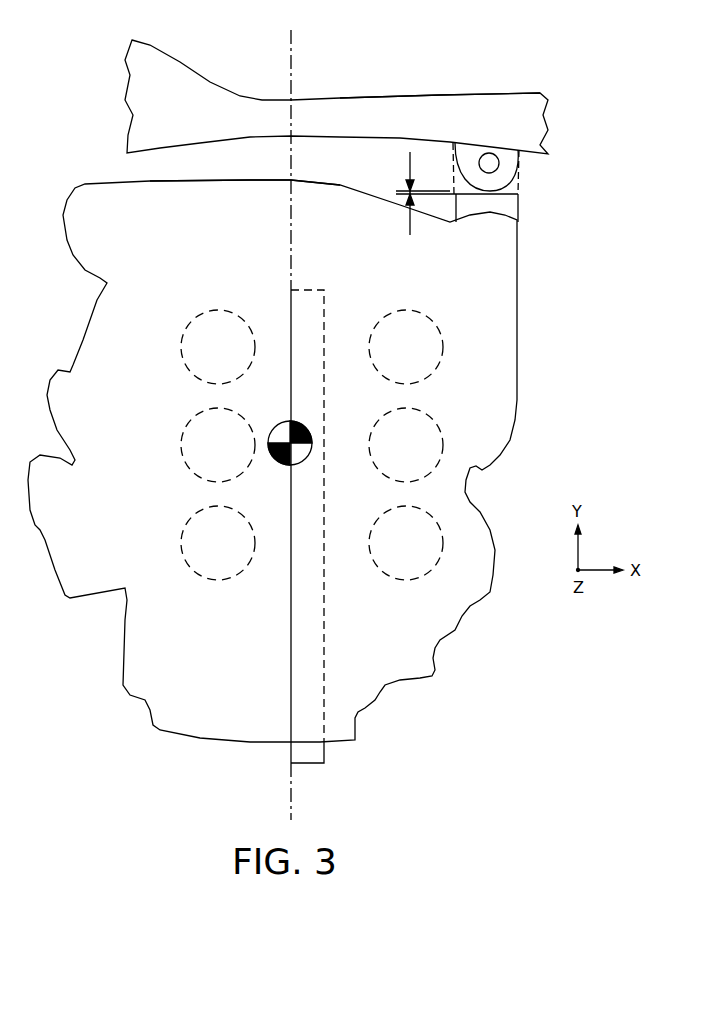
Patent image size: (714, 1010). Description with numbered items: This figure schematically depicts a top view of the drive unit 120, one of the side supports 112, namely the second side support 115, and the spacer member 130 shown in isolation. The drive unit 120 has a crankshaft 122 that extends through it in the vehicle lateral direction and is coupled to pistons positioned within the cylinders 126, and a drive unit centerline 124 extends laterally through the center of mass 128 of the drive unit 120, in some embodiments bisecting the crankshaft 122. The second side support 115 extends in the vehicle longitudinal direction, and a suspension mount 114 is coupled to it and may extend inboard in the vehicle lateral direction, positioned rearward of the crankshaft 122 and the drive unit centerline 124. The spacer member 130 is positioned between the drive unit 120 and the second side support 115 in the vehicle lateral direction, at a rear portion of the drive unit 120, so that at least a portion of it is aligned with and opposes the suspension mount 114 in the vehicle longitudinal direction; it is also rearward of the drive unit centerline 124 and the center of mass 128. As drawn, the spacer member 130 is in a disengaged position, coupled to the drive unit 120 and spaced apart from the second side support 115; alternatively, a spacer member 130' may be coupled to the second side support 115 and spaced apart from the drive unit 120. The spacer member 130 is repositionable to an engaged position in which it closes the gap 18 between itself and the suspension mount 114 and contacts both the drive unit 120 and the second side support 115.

The side support 112 is at (255, 93).
The second side support 115 is at (372, 113).
The drive unit 120 is at (108, 230).
The crankshaft 122 is at (305, 765).
The drive unit centerline 124 is at (290, 175).
The cylinders 126 is at (215, 310).
The center of mass 128 is at (285, 462).
The spacer member 130 is at (517, 213).
The spacer member 130' is at (468, 150).
The suspension mount 114 is at (515, 160).
The gap 18 is at (410, 162).